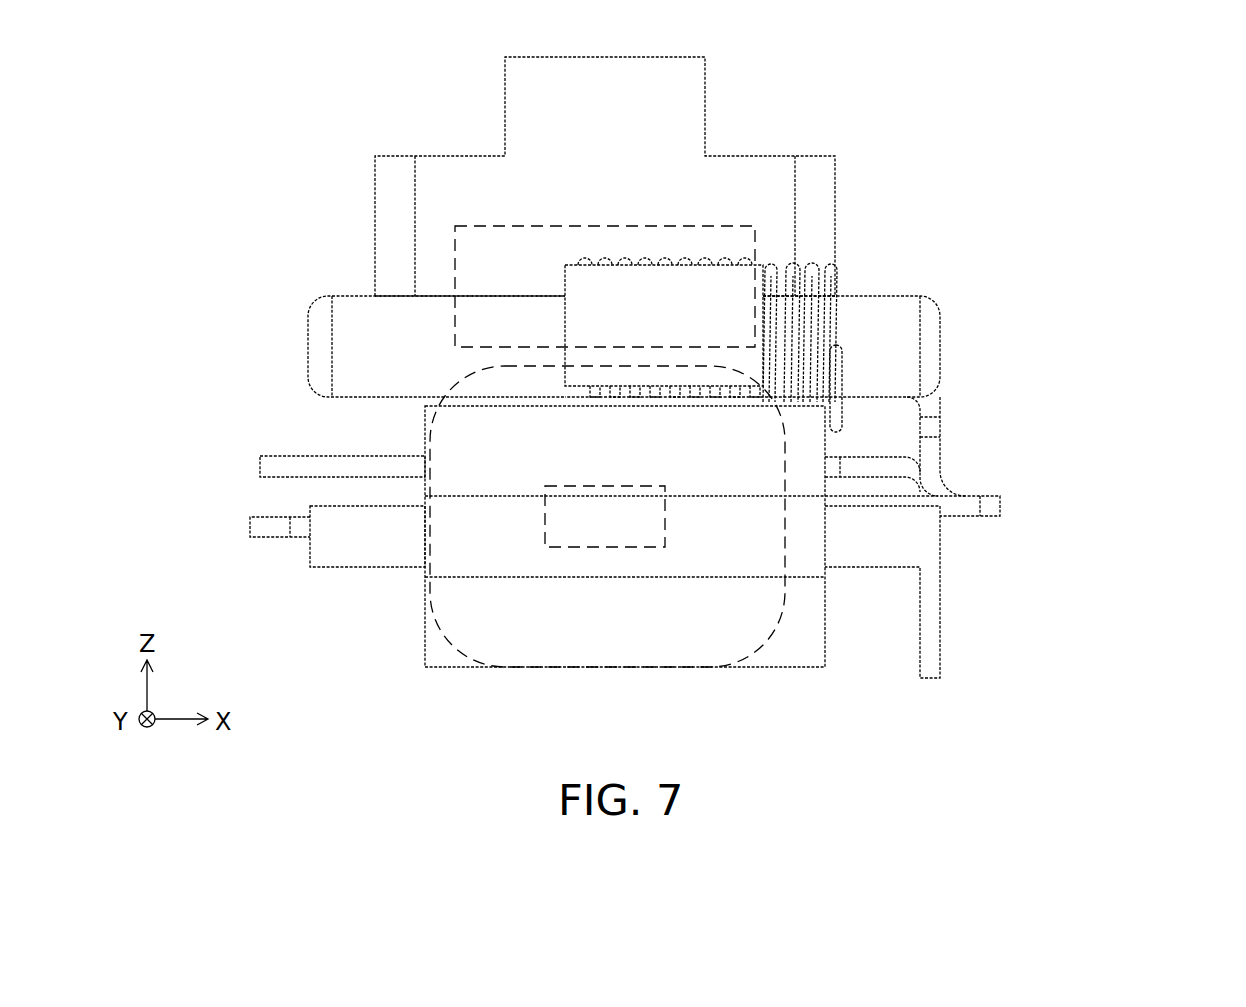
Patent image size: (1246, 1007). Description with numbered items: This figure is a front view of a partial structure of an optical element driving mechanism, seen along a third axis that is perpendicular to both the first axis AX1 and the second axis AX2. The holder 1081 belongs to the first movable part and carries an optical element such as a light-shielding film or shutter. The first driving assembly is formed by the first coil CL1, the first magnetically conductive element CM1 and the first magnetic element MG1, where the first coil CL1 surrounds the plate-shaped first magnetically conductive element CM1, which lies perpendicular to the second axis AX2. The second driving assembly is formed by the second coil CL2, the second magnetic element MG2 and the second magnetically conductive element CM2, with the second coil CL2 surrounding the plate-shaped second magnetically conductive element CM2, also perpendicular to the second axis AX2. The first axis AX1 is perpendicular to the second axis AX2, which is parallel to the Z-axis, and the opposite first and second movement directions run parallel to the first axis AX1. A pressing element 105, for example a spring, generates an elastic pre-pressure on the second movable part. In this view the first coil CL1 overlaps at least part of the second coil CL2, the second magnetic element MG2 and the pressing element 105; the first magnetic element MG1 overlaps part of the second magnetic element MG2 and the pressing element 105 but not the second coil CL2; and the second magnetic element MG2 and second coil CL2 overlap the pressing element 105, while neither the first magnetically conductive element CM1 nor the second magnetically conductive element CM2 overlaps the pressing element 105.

The holder 1081 is at (817, 183).
The first magnetic element MG1 is at (482, 262).
The second magnetic element MG2 is at (733, 287).
The pressing element 105 is at (805, 280).
The first coil CL1 is at (455, 402).
The second coil CL2 is at (793, 648).
The first magnetically conductive element CM1 is at (603, 527).
The second magnetically conductive element CM2 is at (364, 550).
The first axis AX1 is at (1062, 600).
The second axis AX2 is at (1124, 542).